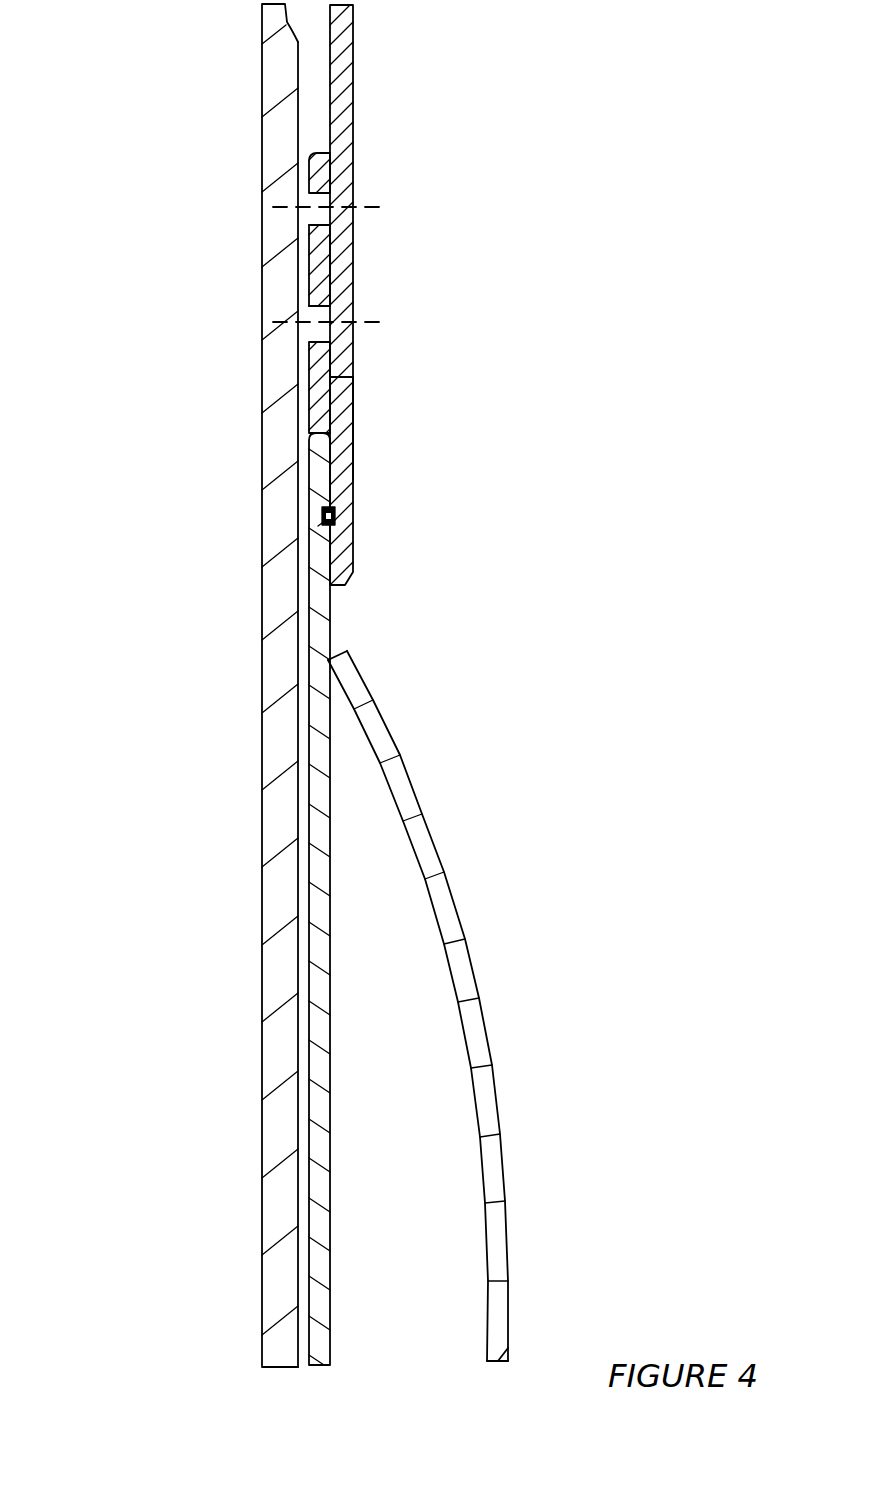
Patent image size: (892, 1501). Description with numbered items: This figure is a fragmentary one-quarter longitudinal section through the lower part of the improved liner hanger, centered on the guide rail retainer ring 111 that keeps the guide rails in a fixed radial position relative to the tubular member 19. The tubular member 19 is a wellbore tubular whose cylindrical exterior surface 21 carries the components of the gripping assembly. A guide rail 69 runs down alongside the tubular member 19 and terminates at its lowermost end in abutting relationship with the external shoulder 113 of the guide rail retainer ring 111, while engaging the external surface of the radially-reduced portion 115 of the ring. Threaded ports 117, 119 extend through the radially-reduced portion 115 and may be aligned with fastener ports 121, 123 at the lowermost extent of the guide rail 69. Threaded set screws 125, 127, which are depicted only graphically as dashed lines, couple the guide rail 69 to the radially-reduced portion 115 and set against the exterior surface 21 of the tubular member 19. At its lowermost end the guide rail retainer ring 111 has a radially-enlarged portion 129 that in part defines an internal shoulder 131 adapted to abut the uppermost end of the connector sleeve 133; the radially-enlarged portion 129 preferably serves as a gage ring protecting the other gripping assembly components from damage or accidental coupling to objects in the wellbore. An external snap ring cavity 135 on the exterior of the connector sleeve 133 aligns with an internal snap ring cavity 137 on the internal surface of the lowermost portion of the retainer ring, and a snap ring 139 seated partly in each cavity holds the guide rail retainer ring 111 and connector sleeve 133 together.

The tubular member 19 is at (270, 50).
The exterior surface 21 is at (301, 127).
The guide rail 69 is at (348, 73).
The threaded port 117 is at (330, 193).
The fastener port 121 is at (332, 228).
The radially-reduced portion 115 is at (332, 263).
The threaded port 119 is at (331, 305).
The fastener port 123 is at (338, 346).
The external shoulder 113 is at (353, 378).
The guide rail retainer ring 111 is at (353, 433).
The threaded set screw 127 is at (272, 207).
The threaded set screw 125 is at (272, 322).
The radially-enlarged portion 129 is at (353, 485).
The internal shoulder 131 is at (311, 433).
The connector sleeve 133 is at (322, 633).
The external snap ring cavity 135 is at (318, 526).
The internal snap ring cavity 137 is at (336, 516).
The snap ring 139 is at (321, 517).